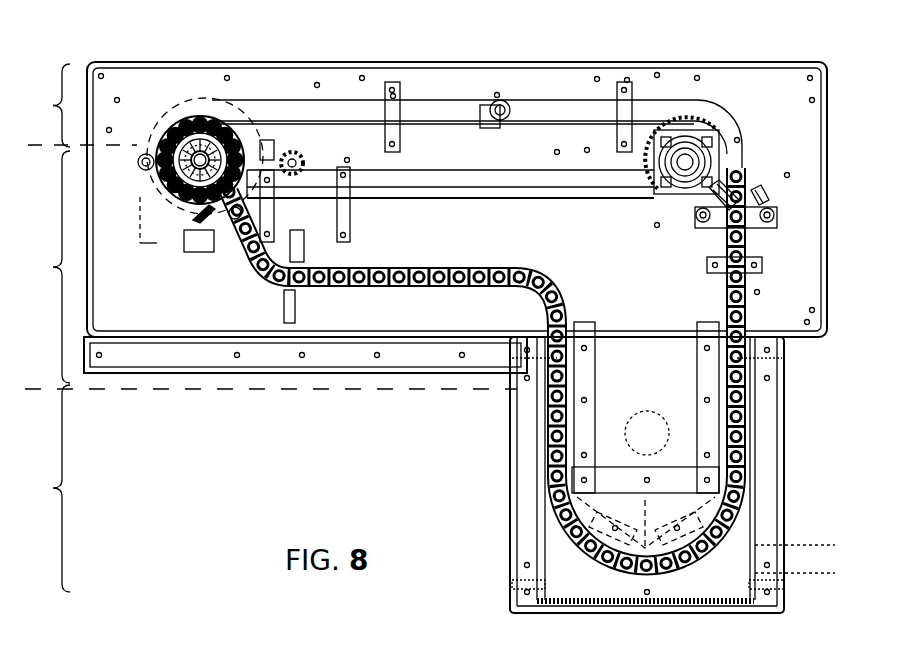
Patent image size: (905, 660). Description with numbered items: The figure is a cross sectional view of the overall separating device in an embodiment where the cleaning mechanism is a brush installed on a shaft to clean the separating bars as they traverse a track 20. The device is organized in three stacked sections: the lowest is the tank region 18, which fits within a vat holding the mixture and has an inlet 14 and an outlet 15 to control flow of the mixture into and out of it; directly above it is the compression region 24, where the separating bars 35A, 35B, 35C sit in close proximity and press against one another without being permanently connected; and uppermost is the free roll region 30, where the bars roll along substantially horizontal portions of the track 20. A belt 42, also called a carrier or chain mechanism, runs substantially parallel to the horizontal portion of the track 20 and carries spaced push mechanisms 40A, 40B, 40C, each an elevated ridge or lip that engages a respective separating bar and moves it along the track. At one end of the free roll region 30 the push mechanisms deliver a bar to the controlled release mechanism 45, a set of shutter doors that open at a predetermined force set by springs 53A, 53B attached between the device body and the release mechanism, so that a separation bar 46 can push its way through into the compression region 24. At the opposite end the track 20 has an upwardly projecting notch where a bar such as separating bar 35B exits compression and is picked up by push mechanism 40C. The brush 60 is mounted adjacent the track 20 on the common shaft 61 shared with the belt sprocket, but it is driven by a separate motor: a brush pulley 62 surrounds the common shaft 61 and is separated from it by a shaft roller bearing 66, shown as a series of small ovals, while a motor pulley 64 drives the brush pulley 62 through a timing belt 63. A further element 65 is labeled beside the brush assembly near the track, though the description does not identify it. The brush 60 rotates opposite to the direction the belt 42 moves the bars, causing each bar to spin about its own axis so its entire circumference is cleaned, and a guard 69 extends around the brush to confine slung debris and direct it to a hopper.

The inlet 14 is at (822, 557).
The outlet 15 is at (645, 479).
The tank region 18 is at (50, 488).
The track 20 is at (732, 128).
The compression region 24 is at (50, 267).
The free roll region 30 is at (50, 105).
The separating bar 35A is at (497, 98).
The separating bar 35B is at (233, 215).
The separating bar 35C is at (290, 291).
The push mechanism 40A is at (483, 116).
The push mechanism 40B is at (133, 198).
The push mechanism 40C is at (270, 208).
The belt 42 is at (205, 143).
The controlled release mechanism 45 is at (780, 224).
The separation bar 46 is at (742, 233).
The spring 53A is at (722, 185).
The spring 53B is at (762, 200).
The brush 60 is at (183, 130).
The common shaft 61 is at (187, 153).
The brush pulley 62 is at (172, 132).
The timing belt 63 is at (273, 143).
The motor pulley 64 is at (291, 150).
The pawl 65 is at (200, 213).
The shaft roller bearing 66 is at (172, 171).
The guard 69 is at (143, 243).